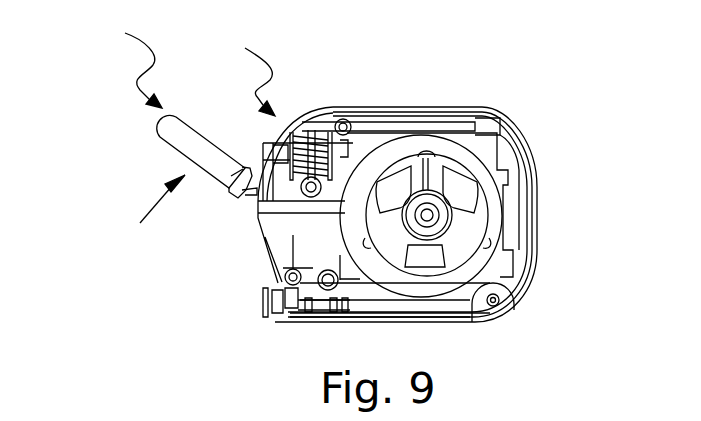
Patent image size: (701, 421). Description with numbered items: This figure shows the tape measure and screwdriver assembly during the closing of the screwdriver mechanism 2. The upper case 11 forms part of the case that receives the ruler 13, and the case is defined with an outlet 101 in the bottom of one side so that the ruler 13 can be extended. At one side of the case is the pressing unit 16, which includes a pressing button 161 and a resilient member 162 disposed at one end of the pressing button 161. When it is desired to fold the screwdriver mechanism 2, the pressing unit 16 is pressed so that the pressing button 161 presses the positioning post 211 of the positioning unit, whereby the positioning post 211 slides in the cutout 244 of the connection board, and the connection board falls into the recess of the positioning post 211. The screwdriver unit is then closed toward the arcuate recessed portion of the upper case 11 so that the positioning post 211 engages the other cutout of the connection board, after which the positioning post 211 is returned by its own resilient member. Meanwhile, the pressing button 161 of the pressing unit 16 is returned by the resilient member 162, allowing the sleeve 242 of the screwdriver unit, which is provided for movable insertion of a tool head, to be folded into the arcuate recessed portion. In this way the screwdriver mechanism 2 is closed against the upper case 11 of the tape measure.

The screwdriver mechanism 2 is at (137, 58).
The upper case 11 is at (513, 133).
The ruler 13 is at (478, 218).
The pressing unit 16 is at (248, 69).
The pressing button 161 is at (262, 142).
The resilient member 162 is at (313, 130).
The sleeve 242 is at (165, 132).
The cutout 244 is at (255, 197).
The positioning post 211 is at (309, 196).
The outlet 101 is at (265, 290).